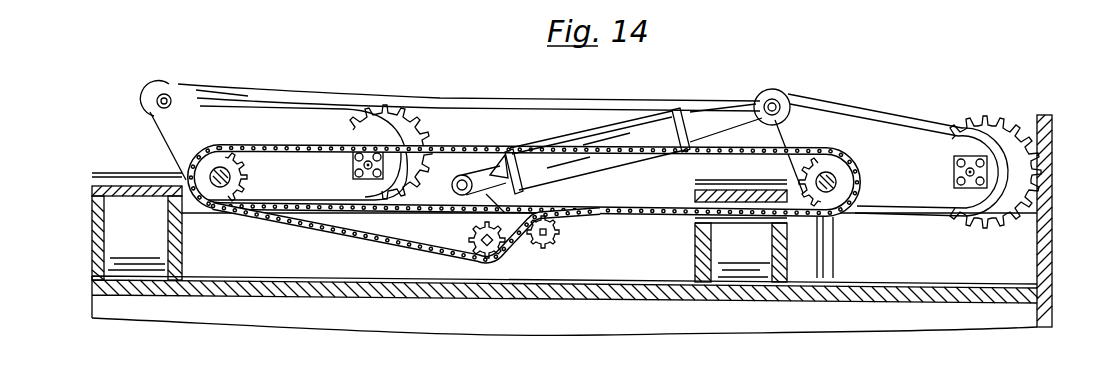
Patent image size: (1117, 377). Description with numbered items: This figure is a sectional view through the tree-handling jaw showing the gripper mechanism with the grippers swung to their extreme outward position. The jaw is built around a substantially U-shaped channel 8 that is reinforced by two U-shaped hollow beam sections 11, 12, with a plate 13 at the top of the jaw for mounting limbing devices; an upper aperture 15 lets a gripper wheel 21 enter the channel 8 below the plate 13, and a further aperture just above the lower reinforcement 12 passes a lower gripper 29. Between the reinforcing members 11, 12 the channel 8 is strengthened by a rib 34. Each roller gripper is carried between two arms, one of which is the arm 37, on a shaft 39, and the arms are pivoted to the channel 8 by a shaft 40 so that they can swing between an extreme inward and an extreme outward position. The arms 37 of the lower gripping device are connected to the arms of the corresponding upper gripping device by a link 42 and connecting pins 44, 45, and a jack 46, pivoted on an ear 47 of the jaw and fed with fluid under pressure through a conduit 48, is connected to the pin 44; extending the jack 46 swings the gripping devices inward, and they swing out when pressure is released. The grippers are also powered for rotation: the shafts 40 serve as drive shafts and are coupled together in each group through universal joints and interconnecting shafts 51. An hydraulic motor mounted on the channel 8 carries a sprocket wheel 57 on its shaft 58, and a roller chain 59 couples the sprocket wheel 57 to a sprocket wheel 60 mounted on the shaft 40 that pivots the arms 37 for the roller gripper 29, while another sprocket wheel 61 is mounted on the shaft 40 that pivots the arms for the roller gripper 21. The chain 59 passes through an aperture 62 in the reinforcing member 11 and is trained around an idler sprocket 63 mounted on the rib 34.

The U-shaped channel 8 is at (448, 299).
The U-shaped hollow beam section 11 is at (695, 245).
The U-shaped hollow beam section 12 is at (92, 228).
The plate 13 is at (1053, 258).
The upper aperture 15 is at (72, 84).
The gripper wheel 21 is at (967, 114).
The lower gripper 29 is at (410, 131).
The rib 34 is at (265, 255).
The arm 37 is at (272, 134).
The shaft 39 is at (353, 162).
The shaft 40 is at (212, 168).
The link 42 is at (618, 101).
The connecting pin 44 is at (776, 100).
The connecting pin 45 is at (165, 94).
The jack 46 is at (597, 143).
The ear 47 is at (462, 178).
The conduit 48 is at (479, 180).
The interconnecting shaft 51 is at (835, 242).
The sprocket wheel 57 is at (563, 240).
The shaft 58 is at (555, 230).
The roller chain 59 is at (377, 233).
The sprocket wheel 60 is at (250, 177).
The sprocket wheel 61 is at (845, 173).
The aperture 62 is at (744, 256).
The idler sprocket 63 is at (471, 234).